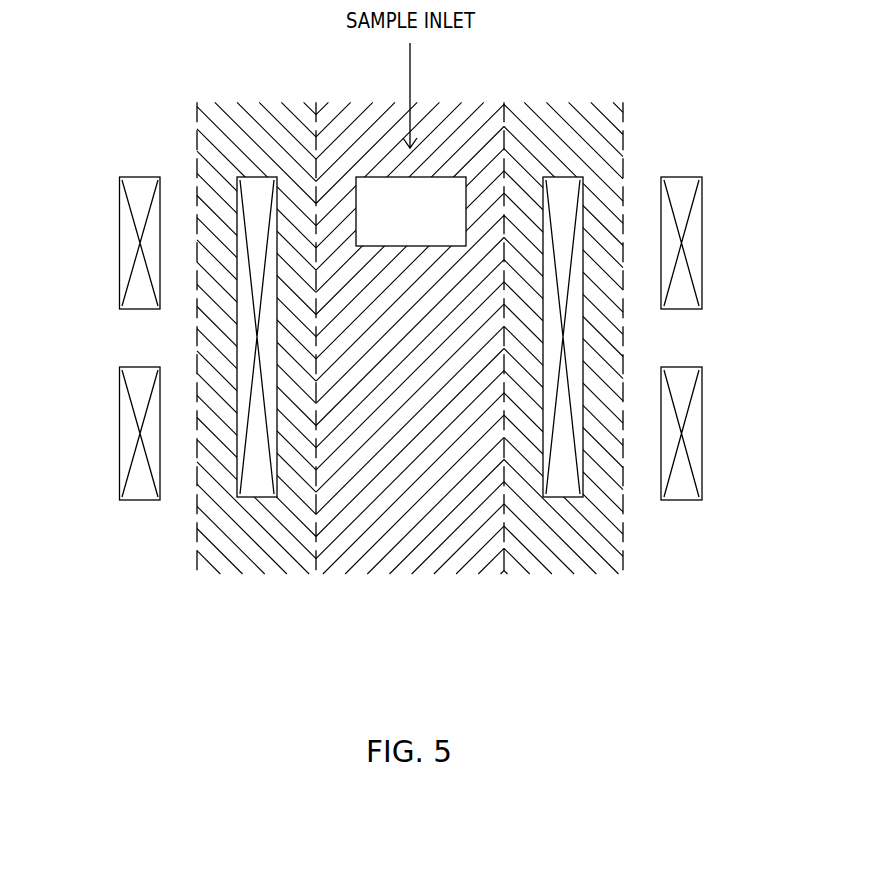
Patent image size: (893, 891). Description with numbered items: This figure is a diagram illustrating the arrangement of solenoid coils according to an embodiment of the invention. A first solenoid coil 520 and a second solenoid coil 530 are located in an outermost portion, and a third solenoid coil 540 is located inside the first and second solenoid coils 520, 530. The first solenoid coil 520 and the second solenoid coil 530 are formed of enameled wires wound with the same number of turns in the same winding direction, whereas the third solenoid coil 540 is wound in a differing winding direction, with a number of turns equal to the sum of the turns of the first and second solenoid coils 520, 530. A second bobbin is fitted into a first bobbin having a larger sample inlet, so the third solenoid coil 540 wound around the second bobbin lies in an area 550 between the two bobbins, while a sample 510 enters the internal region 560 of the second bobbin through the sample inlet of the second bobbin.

The sample 510 is at (455, 177).
The first solenoid coil 520 is at (120, 177).
The second solenoid coil 530 is at (120, 367).
The third solenoid coil 540 is at (255, 177).
The area between the first bobbin and the second bobbin 550 is at (266, 560).
The internal region of the second bobbin 560 is at (410, 540).